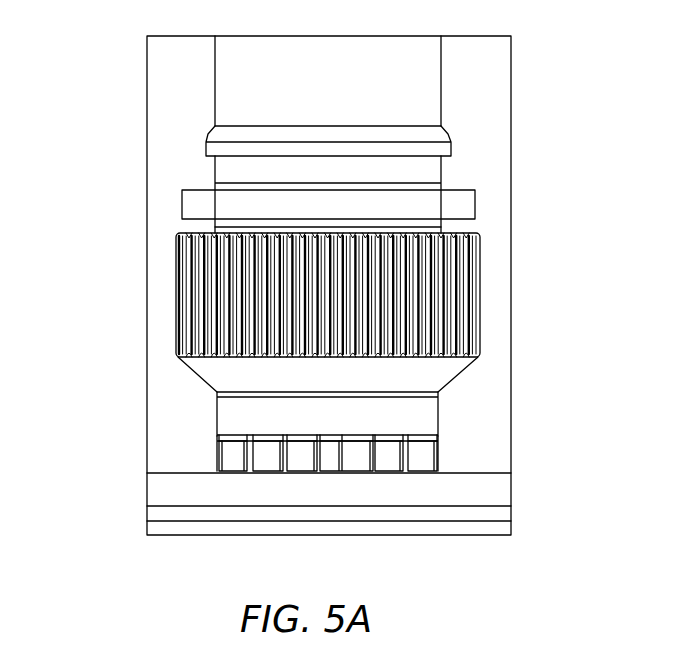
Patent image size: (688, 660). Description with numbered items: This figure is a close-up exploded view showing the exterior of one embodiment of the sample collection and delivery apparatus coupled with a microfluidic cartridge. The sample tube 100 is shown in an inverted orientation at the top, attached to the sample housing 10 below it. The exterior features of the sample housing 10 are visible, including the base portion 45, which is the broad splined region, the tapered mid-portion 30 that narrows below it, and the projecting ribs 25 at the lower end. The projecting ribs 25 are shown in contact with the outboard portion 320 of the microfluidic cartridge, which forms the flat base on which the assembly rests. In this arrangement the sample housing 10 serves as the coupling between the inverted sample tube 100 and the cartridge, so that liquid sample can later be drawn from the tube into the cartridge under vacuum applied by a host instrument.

The sample tube 100 is at (250, 86).
The sample housing 10 is at (178, 292).
The base portion 45 is at (450, 291).
The tapered mid-portion 30 is at (422, 412).
The projecting ribs 25 is at (412, 458).
The outboard portion 320 is at (185, 492).